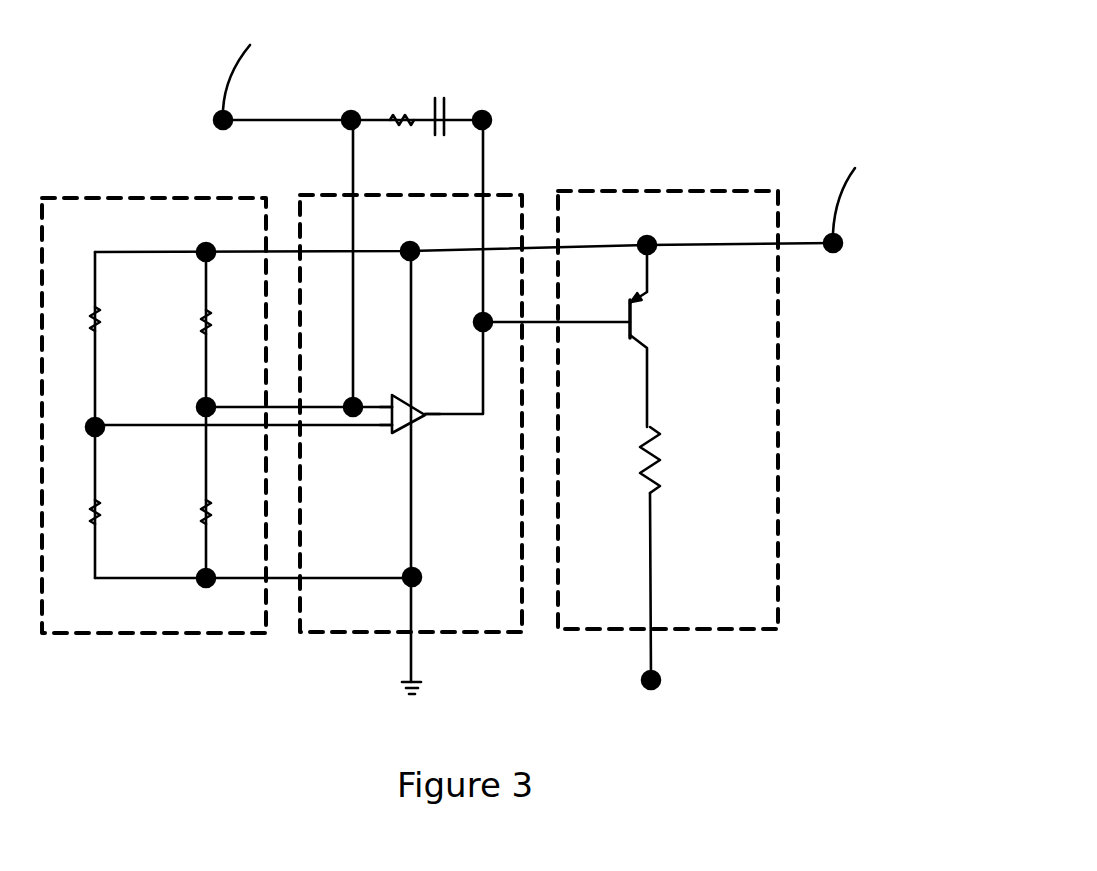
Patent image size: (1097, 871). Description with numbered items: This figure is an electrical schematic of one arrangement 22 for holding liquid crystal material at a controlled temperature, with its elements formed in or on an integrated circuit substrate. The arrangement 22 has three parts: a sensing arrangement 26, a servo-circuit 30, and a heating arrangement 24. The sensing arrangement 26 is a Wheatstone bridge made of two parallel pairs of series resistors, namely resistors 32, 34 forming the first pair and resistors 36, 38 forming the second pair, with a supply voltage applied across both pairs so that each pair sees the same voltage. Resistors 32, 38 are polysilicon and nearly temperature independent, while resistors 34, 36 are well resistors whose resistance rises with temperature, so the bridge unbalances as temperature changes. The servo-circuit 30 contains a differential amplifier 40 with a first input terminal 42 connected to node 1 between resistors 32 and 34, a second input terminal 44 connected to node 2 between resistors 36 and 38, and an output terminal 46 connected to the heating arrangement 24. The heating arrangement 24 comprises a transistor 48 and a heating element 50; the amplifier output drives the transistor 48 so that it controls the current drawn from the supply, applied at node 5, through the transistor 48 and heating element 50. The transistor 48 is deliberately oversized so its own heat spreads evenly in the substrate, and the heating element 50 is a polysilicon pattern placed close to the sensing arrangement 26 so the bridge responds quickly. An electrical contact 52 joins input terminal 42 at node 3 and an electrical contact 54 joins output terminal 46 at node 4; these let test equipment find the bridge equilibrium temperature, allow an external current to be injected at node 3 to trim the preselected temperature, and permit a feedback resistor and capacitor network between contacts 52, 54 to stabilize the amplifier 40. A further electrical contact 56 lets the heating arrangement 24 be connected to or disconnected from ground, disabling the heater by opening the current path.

The arrangement 22 is at (662, 125).
The sensing arrangement 26 is at (182, 650).
The servo-circuit 30 is at (362, 650).
The heating arrangement 24 is at (577, 650).
The resistor 32 is at (203, 310).
The resistor 34 is at (203, 500).
The resistor 36 is at (100, 318).
The resistor 38 is at (100, 512).
The node 1 is at (103, 432).
The node 2 is at (203, 403).
The node 3 is at (348, 402).
The node 4 is at (476, 320).
The node 5 is at (655, 252).
The differential amplifier 40 is at (408, 405).
The first input terminal 42 is at (393, 398).
The second input terminal 44 is at (390, 430).
The output terminal 46 is at (420, 413).
The transistor 48 is at (636, 305).
The heating element 50 is at (656, 470).
The electrical contact 52 is at (351, 110).
The electrical contact 54 is at (482, 110).
The electrical contact 56 is at (644, 675).